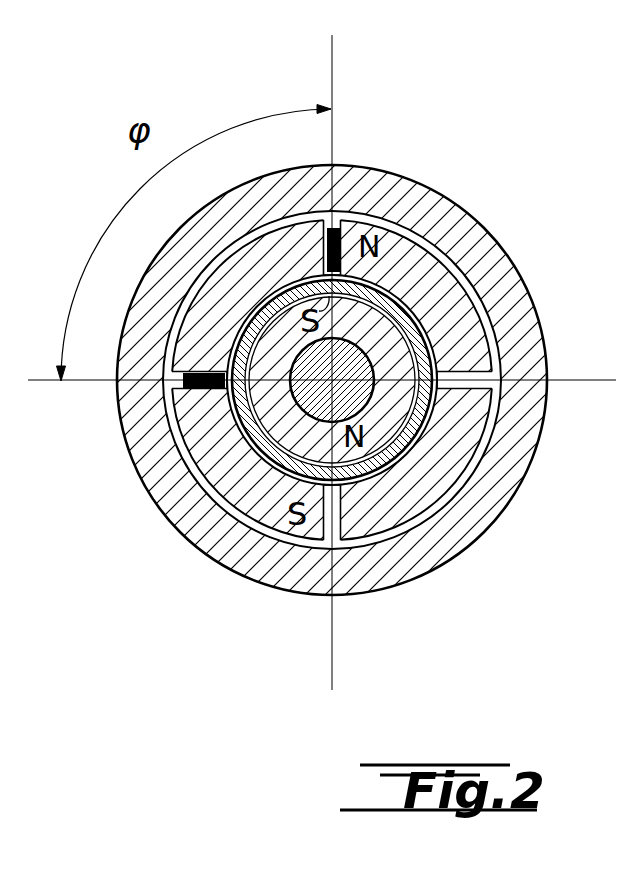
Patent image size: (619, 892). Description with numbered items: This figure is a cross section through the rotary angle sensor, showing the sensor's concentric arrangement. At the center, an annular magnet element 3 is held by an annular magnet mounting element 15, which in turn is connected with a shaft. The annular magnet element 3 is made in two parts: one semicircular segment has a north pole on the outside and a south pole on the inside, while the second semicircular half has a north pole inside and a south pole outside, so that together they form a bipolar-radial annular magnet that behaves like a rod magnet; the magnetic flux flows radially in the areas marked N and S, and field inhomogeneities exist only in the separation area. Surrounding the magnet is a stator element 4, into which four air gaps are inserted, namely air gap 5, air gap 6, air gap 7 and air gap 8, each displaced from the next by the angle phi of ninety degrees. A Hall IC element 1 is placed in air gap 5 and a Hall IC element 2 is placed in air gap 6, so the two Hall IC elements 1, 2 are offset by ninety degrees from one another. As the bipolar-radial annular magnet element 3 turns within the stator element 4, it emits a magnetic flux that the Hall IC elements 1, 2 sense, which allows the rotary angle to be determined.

The Hall IC element 1 is at (204, 367).
The Hall IC element 2 is at (322, 254).
The annular magnet element 3 is at (407, 347).
The stator element 4 is at (252, 496).
The air gap 5 is at (182, 389).
The air gap 6 is at (337, 224).
The air gap 7 is at (503, 383).
The air gap 8 is at (335, 537).
The annular magnet mounting element 15 is at (482, 325).